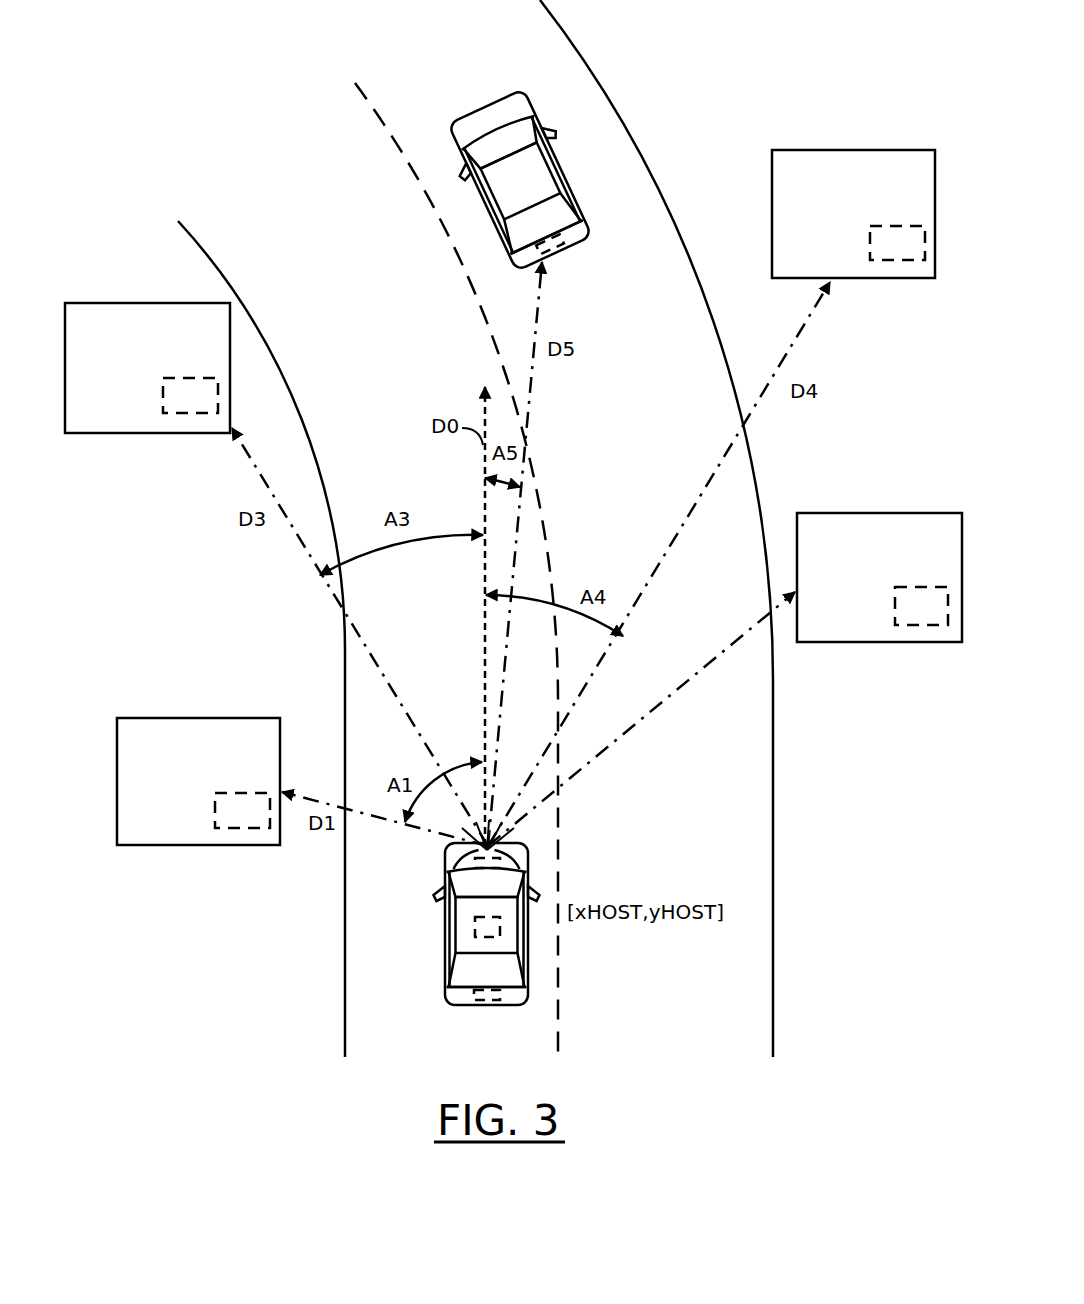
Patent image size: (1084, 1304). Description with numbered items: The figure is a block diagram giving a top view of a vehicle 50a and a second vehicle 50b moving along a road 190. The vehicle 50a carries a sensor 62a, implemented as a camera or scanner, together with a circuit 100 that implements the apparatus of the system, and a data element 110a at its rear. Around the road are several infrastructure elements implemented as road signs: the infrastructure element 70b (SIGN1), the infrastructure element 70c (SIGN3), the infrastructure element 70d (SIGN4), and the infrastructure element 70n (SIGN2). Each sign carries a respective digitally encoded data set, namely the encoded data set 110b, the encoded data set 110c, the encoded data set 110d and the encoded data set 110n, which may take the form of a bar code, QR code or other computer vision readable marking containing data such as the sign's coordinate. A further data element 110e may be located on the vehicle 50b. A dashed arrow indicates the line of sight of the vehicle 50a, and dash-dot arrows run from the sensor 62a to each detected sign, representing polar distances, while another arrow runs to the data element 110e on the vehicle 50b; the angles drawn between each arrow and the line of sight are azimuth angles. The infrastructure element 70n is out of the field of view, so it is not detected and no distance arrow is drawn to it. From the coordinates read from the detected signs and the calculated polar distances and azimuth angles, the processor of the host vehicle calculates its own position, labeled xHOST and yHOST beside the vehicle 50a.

The vehicle 50a is at (444, 963).
The vehicle 50b is at (490, 103).
The sensor 62a is at (475, 866).
The circuit 100 is at (475, 927).
The data element 110a is at (487, 1005).
The data element 110e is at (620, 225).
The infrastructure element 70b is at (160, 718).
The infrastructure element 70c is at (108, 303).
The infrastructure element 70d is at (812, 150).
The infrastructure element 70n is at (840, 513).
The encoded data set 110b is at (234, 793).
The encoded data set 110c is at (182, 378).
The encoded data set 110d is at (888, 226).
The encoded data set 110n is at (913, 587).
The road 190 is at (747, 975).